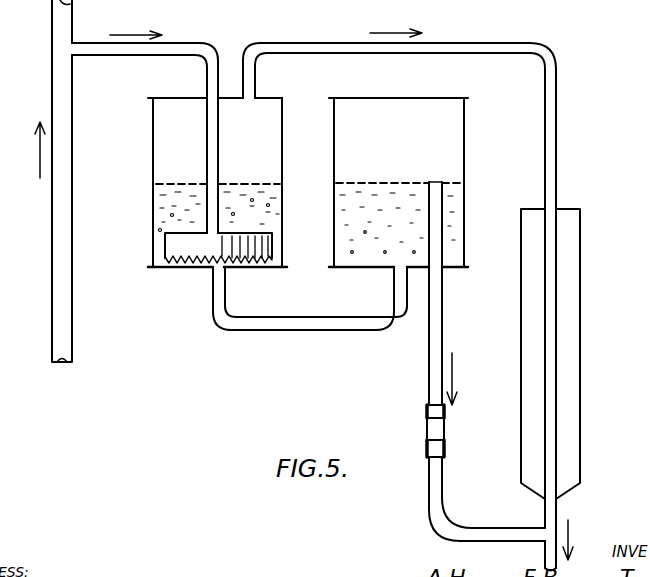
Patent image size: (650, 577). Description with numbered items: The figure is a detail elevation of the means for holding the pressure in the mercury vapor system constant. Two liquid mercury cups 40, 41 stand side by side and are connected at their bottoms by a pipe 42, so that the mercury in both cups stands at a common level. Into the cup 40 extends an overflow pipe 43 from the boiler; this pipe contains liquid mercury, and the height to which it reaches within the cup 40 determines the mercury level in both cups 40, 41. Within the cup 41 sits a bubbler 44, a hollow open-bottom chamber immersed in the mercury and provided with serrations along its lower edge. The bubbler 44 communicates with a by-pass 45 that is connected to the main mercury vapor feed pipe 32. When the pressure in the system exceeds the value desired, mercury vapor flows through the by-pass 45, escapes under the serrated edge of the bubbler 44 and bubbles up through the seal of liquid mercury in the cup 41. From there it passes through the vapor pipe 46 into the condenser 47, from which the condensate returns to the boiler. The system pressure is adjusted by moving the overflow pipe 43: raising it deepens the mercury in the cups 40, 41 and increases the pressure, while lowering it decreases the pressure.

The main mercury vapor feed pipe 32 is at (54, 266).
The by-pass 45 is at (172, 46).
The liquid mercury cup 41 is at (153, 144).
The bubbler 44 is at (172, 250).
The liquid mercury cup 40 is at (464, 139).
The pipe 42 is at (338, 326).
The overflow pipe 43 is at (442, 323).
The vapor pipe 46 is at (556, 132).
The condenser 47 is at (581, 313).